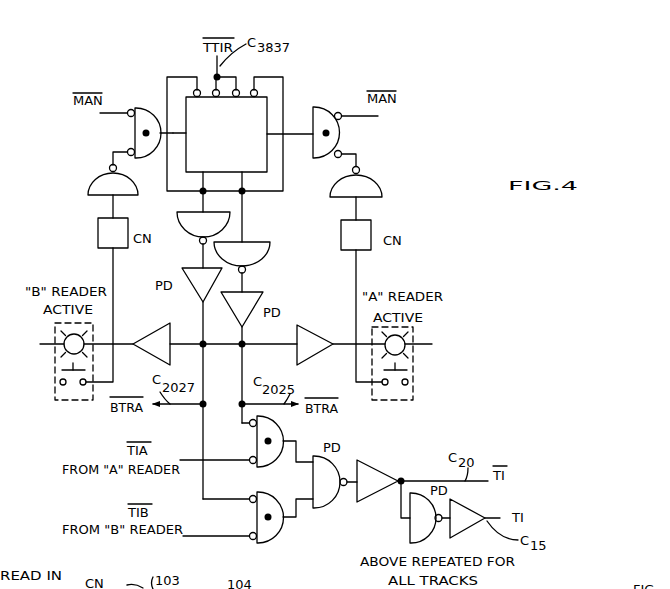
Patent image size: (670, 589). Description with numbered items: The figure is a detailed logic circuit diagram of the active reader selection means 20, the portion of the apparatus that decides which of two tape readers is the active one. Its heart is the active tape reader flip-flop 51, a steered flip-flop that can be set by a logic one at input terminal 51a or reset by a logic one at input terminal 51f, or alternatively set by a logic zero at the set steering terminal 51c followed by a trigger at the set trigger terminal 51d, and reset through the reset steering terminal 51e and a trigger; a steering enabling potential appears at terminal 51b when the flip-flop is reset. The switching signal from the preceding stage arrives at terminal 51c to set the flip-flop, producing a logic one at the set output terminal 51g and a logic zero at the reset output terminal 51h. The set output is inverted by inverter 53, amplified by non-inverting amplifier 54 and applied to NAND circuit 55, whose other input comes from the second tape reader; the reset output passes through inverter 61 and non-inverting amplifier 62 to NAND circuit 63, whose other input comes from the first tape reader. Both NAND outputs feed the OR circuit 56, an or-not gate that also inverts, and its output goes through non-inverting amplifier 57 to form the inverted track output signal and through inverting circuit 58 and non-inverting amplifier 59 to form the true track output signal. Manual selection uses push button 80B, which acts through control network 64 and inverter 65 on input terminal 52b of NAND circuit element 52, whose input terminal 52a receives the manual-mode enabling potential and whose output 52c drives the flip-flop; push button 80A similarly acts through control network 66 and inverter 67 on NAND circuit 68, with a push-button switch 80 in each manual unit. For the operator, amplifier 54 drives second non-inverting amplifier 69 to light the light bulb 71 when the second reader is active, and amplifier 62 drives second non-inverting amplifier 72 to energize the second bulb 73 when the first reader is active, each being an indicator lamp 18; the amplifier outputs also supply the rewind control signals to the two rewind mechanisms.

The indicator lamp 18 is at (236, 340).
The active reader selection means 20 is at (421, 145).
The active tape reader flip-flop 51 is at (284, 110).
The input terminal 51a is at (185, 140).
The terminal 51b is at (194, 91).
The set steering terminal 51c is at (214, 89).
The set trigger terminal 51d is at (238, 89).
The reset steering terminal 51e is at (260, 86).
The input terminal 51f is at (268, 140).
The set output terminal 51g is at (217, 192).
The reset output terminal 51h is at (257, 207).
The NAND circuit element 52 is at (134, 133).
The input terminal 52a is at (127, 114).
The input terminal 52b is at (127, 152).
The gate output 52c is at (160, 112).
The inverter 53 is at (196, 240).
The non-inverting amplifier 54 is at (190, 268).
The NAND circuit 55 is at (256, 517).
The OR circuit 56 is at (313, 470).
The non-inverting amplifier 57 is at (394, 467).
The inverting circuit 58 is at (410, 529).
The non-inverting amplifier 59 is at (468, 512).
The inverter 61 is at (262, 248).
The non-inverting amplifier 62 is at (258, 294).
The NAND circuit 63 is at (256, 441).
The control network 64 is at (98, 242).
The inverter 65 is at (92, 185).
The control network 66 is at (341, 245).
The inverter 67 is at (378, 194).
The NAND circuit 68 is at (345, 134).
The second non-inverting amplifier 69 is at (157, 325).
The light bulb 71 is at (60, 348).
The second non-inverting amplifier 72 is at (328, 329).
The second bulb 73 is at (407, 351).
The pushbutton switch 80 is at (60, 382).
The push button switch 80A is at (381, 395).
The push button 80B is at (67, 389).